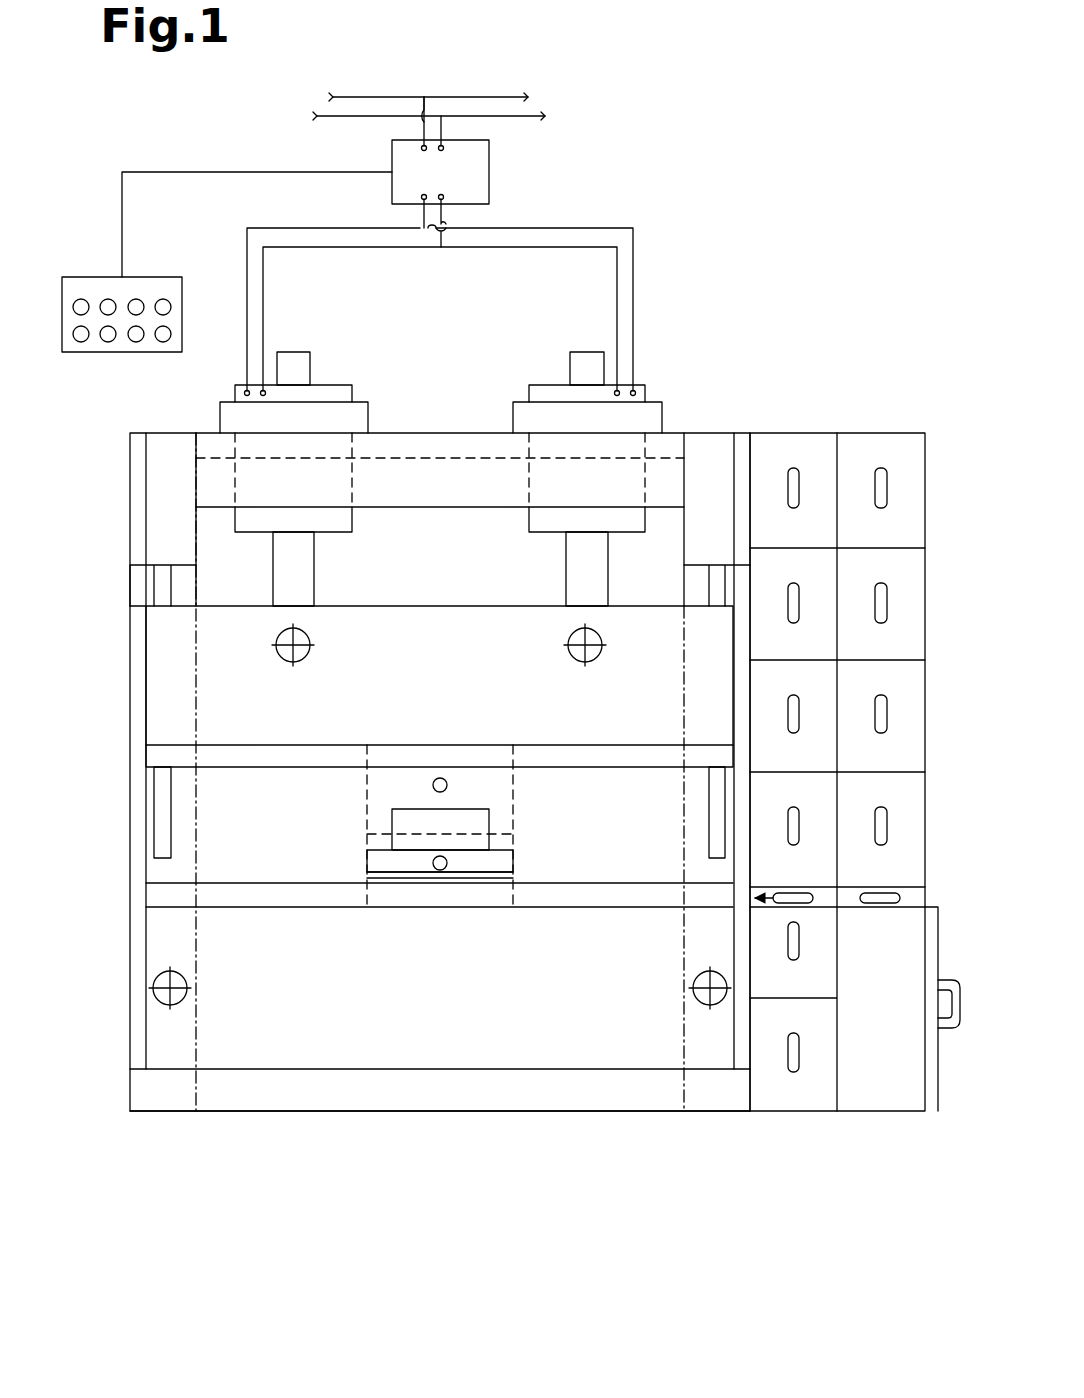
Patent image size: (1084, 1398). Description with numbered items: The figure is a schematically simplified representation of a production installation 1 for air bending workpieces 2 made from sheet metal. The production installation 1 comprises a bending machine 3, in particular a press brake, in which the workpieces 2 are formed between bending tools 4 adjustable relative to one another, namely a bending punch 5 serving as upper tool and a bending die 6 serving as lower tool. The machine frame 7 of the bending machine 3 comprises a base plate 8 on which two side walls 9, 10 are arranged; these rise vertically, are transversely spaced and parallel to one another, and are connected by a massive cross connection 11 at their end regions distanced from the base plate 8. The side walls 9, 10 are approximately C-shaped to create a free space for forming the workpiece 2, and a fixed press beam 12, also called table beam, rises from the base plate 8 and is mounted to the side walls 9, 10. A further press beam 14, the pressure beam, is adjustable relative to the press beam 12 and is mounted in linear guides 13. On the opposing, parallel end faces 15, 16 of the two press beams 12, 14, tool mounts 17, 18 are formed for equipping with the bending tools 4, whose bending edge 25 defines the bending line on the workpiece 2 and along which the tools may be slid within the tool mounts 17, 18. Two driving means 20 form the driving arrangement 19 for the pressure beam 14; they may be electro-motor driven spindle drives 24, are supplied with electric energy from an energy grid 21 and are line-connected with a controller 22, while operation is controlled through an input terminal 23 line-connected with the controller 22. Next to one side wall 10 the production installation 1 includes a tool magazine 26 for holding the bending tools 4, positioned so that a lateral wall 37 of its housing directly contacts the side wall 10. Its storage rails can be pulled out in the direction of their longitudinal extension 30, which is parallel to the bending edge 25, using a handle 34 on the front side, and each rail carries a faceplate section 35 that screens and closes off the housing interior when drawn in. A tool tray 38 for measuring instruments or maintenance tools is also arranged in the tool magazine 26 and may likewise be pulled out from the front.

The production installation 1 is at (660, 250).
The workpiece 2 is at (405, 823).
The bending machine 3 is at (697, 398).
The bending tools 4 is at (527, 885).
The bending punch 5 is at (503, 812).
The bending die 6 is at (403, 875).
The machine frame 7 is at (140, 606).
The base plate 8 is at (407, 1112).
The side wall 9 is at (145, 828).
The side wall 10 is at (739, 857).
The cross connection 11 is at (432, 473).
The press beam 12 is at (703, 950).
The linear guides 13 is at (163, 789).
The press beam 14 is at (700, 672).
The end face 15 is at (183, 903).
The end face 16 is at (183, 752).
The tool mount 17 is at (254, 897).
The tool mount 18 is at (233, 753).
The driving arrangement 19 is at (227, 352).
The driving means 20 is at (323, 372).
The energy grid 21 is at (478, 92).
The controller 22 is at (473, 172).
The input terminal 23 is at (118, 350).
The spindle drives 24 is at (230, 415).
The bending edge 25 is at (503, 847).
The tool magazine 26 is at (920, 415).
The longitudinal extension 30 is at (790, 900).
The handle 34 is at (882, 485).
The faceplate section 35 is at (860, 453).
The lateral wall 37 is at (748, 1095).
The tool tray 38 is at (908, 895).